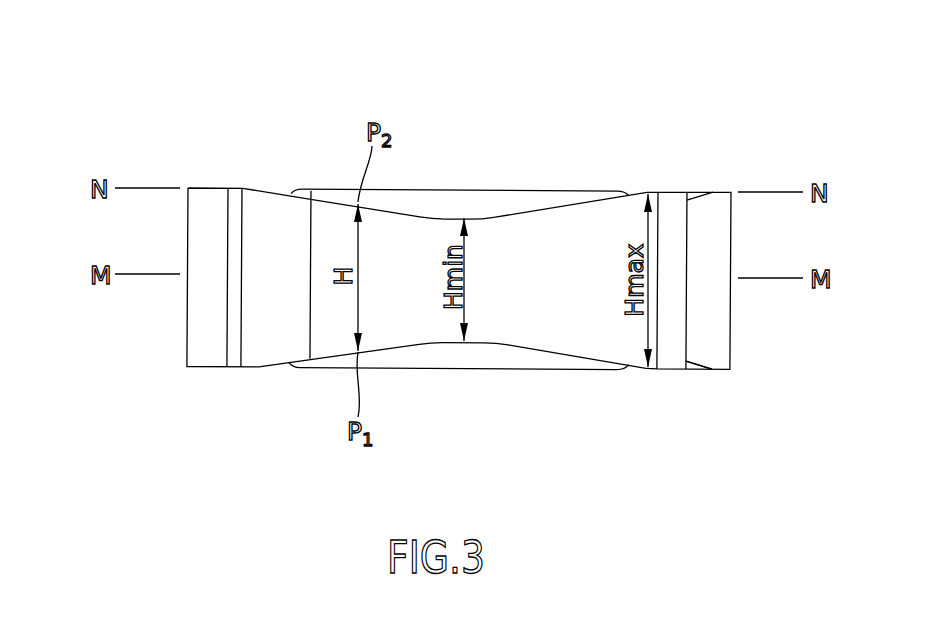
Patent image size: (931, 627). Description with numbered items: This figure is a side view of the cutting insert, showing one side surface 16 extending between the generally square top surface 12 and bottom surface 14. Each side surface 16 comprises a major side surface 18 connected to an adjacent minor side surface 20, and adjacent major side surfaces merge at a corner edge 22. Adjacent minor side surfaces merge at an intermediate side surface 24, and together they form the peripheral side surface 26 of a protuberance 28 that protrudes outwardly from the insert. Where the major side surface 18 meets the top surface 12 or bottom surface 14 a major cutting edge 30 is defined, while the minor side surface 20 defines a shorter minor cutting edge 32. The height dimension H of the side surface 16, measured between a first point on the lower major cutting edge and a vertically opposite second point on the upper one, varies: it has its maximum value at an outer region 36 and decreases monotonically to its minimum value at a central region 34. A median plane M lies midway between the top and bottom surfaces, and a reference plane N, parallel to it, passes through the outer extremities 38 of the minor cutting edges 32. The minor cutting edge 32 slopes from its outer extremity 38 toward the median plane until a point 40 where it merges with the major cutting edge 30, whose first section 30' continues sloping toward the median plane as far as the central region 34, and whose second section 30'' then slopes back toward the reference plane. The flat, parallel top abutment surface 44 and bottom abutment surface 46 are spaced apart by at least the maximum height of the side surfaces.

The top surface 12 is at (591, 92).
The bottom surface 14 is at (566, 380).
The side surface 16 is at (560, 295).
The major side surface 18 is at (420, 320).
The minor side surface 20 is at (273, 340).
The corner edge 22 is at (680, 320).
The intermediate side surface 24 is at (203, 348).
The peripheral side surface 26 is at (206, 290).
The protuberance 28 is at (205, 182).
The major cutting edge 30 is at (545, 281).
The first section of major cutting edge 30' is at (378, 167).
The second section of major cutting edge 30'' is at (571, 167).
The minor cutting edge 32 is at (288, 192).
The central region 34 is at (462, 345).
The outer region 36 is at (268, 184).
The outer extremity 38 is at (252, 188).
The point 40 is at (312, 190).
The top abutment surface 44 is at (594, 190).
The bottom abutment surface 46 is at (330, 368).